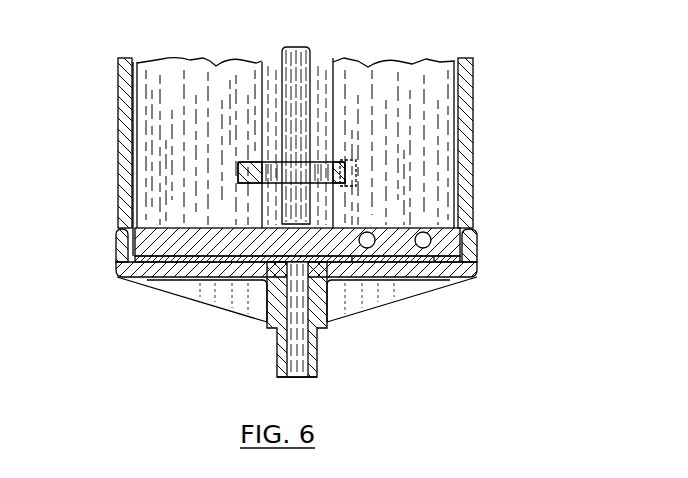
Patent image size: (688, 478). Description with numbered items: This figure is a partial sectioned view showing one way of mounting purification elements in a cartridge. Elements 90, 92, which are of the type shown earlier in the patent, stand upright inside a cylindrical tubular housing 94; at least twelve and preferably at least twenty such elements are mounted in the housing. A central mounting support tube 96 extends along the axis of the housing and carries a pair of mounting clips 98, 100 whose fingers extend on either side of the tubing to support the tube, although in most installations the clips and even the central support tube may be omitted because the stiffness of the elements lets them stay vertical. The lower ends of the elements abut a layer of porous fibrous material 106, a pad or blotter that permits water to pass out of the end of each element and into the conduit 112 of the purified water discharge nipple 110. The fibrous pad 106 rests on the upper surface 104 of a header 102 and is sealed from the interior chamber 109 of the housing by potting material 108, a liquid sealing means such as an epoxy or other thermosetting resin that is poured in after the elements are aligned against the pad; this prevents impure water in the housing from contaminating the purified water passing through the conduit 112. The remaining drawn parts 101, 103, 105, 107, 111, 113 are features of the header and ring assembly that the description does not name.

The element 90 is at (150, 93).
The element 92 is at (427, 110).
The cylindrical tubular housing 94 is at (118, 188).
The central mounting support tube 96 is at (293, 75).
The mounting clip 98 is at (238, 163).
The mounting clip 100 is at (340, 172).
The bottom ring 101 is at (466, 275).
The header 102 is at (478, 257).
The aperture 103 is at (424, 261).
The upper surface 104 is at (367, 242).
The aperture 105 is at (368, 261).
The fibrous material 106 is at (267, 322).
The hole 107 is at (424, 242).
The potting material 108 is at (240, 305).
The interior chamber 109 is at (322, 80).
The purified water discharge nipple 110 is at (277, 377).
The upper plate 111 is at (138, 262).
The conduit 112 is at (318, 377).
The screen plate 113 is at (190, 283).